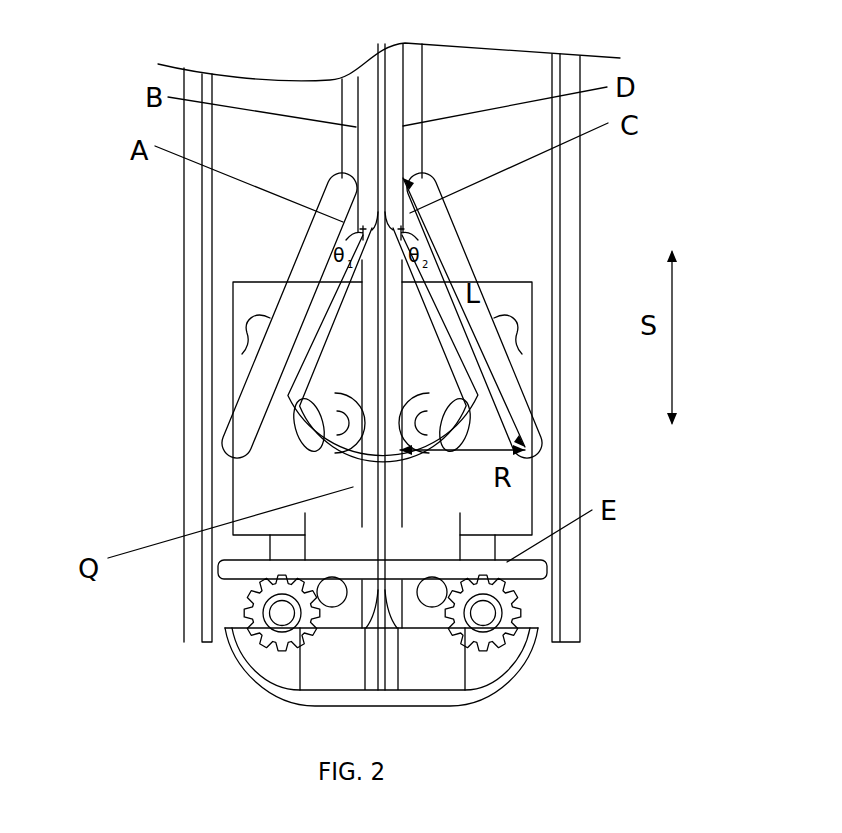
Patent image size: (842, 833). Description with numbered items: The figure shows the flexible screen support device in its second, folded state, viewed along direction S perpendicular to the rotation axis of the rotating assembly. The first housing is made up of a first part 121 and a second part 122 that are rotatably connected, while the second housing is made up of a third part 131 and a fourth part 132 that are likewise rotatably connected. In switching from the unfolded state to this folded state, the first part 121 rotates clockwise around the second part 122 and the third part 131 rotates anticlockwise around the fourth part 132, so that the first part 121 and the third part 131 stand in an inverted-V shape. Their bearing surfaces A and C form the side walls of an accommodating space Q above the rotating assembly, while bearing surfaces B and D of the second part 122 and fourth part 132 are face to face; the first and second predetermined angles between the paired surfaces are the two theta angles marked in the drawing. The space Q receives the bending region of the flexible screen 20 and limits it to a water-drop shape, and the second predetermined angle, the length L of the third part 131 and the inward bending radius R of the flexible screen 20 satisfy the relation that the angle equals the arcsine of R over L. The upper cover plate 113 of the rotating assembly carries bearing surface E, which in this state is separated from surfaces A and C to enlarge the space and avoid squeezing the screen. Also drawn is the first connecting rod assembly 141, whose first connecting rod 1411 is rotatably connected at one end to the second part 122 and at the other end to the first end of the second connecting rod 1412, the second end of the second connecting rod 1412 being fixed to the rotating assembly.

The flexible screen 20 is at (335, 292).
The upper cover plate 113 is at (528, 571).
The first part 121 is at (318, 247).
The second part 122 is at (345, 105).
The third part 131 is at (445, 237).
The fourth part 132 is at (418, 100).
The first connecting rod assembly 141 is at (58, 318).
The first connecting rod 1411 is at (258, 322).
The second connecting rod 1412 is at (252, 487).